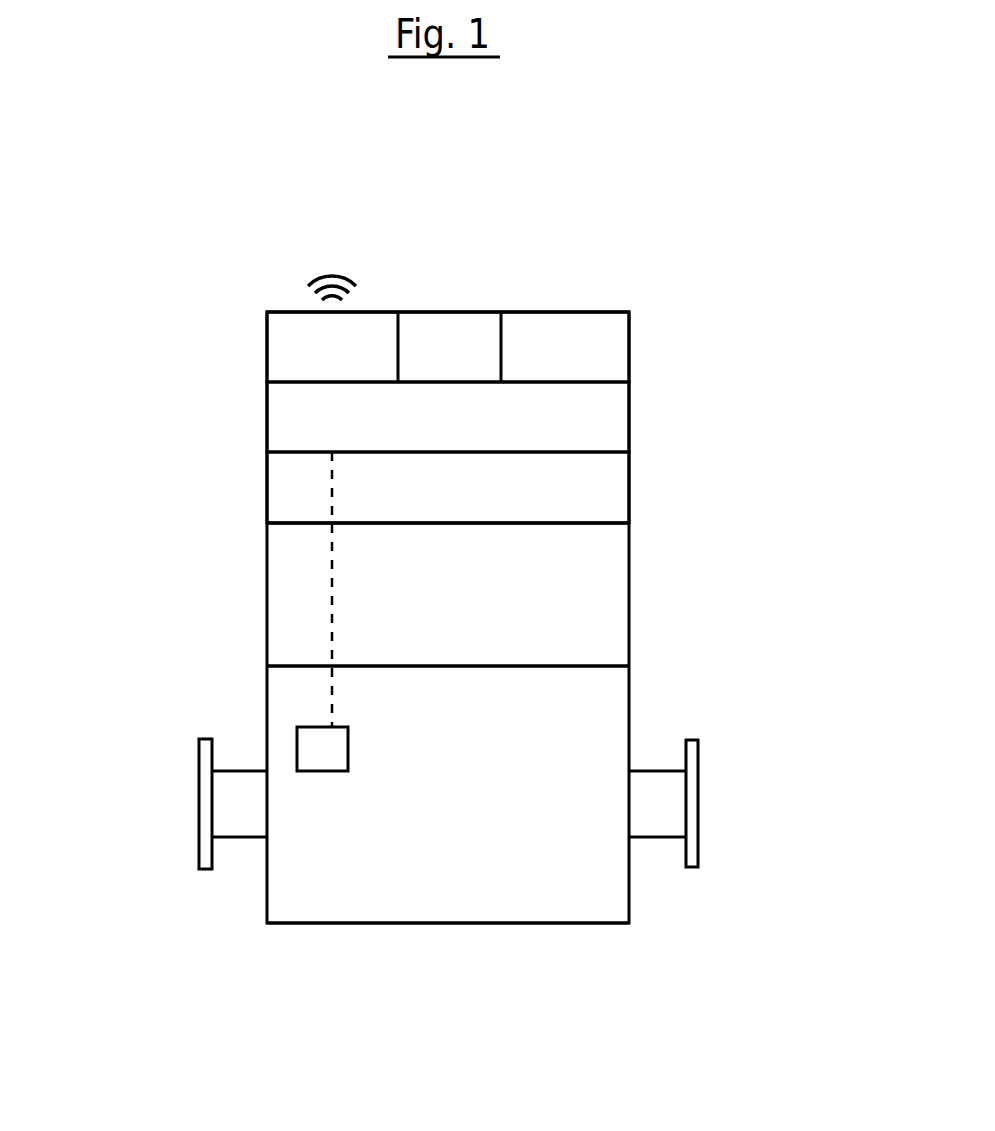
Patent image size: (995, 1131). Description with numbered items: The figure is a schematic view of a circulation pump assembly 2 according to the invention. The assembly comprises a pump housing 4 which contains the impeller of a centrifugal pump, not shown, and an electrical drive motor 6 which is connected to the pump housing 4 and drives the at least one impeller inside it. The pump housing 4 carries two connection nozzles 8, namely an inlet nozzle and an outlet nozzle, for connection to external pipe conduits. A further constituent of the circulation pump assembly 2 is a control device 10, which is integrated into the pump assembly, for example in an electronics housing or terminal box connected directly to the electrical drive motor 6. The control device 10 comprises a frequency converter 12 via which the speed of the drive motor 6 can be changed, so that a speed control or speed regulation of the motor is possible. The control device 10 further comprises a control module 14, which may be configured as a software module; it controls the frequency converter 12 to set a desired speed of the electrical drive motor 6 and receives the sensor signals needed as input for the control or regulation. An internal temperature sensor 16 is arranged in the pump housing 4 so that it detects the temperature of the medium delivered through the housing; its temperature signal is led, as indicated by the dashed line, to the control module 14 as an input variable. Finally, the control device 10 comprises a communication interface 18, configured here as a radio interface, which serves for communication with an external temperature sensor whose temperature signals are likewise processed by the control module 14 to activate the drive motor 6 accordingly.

The circulation pump assembly 2 is at (649, 616).
The pump housing 4 is at (615, 903).
The electrical drive motor 6 is at (283, 613).
The connection nozzles 8 is at (205, 810).
The control device 10 is at (658, 312).
The frequency converter 12 is at (283, 500).
The control module 14 is at (283, 420).
The internal temperature sensor 16 is at (303, 737).
The communication interface 18 is at (283, 357).